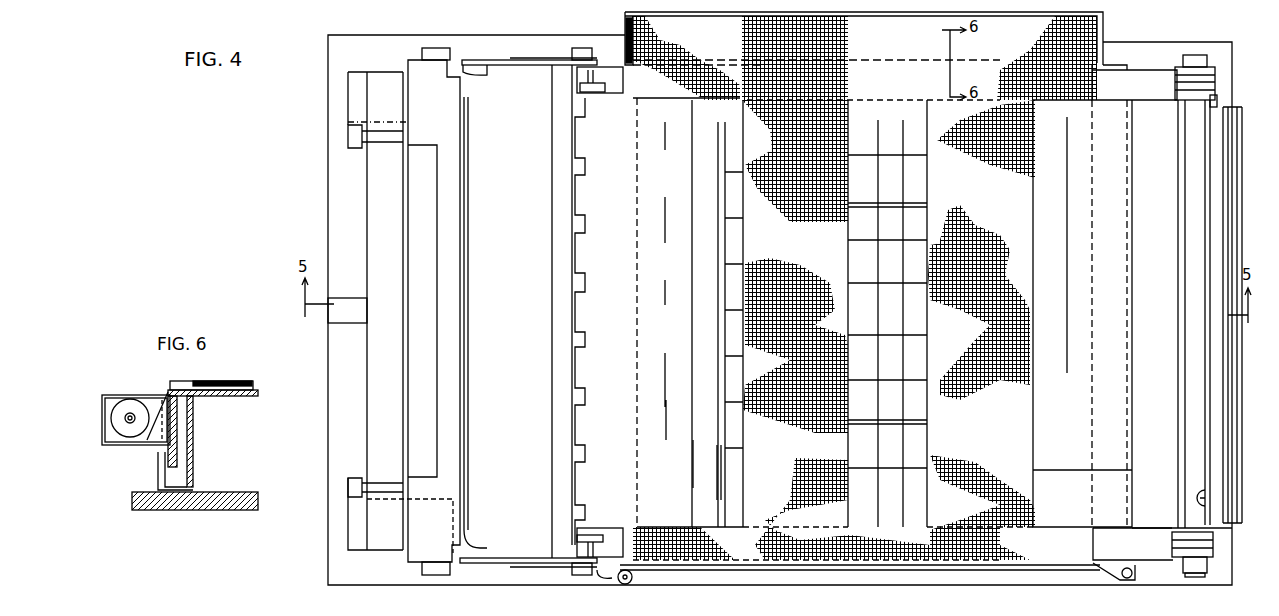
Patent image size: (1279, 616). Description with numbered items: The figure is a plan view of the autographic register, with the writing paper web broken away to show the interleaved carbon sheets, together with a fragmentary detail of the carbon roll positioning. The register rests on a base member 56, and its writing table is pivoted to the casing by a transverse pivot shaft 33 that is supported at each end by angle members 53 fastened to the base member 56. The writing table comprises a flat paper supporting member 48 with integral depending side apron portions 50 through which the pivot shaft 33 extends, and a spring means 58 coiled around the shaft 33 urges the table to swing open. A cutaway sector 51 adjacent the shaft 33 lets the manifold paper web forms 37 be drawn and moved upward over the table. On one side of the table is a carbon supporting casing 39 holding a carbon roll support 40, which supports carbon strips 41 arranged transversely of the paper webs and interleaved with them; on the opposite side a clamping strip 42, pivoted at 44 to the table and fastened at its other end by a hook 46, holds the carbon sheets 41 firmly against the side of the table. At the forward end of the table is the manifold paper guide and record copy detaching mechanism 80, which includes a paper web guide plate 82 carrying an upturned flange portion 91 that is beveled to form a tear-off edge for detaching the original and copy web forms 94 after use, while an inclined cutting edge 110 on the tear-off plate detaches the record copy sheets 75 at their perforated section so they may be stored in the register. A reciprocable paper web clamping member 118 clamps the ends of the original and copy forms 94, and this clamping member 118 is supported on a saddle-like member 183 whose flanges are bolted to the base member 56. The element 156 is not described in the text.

In FIG. 4, the transverse pivot shaft 33 is at (1218, 38).
In FIG. 4, the manifold paper web forms 37 is at (637, 135).
In FIG. 4, the carbon supporting casing 39 is at (624, 25).
In FIG. 6, the carbon supporting casing 39 is at (103, 398).
In FIG. 4, the carbon roll support 40 is at (1100, 44).
In FIG. 6, the carbon roll support 40 is at (131, 414).
In FIG. 4, the carbon strips 41 is at (870, 52).
In FIG. 6, the carbon strips 41 is at (176, 383).
In FIG. 4, the clamping strip 42 is at (813, 568).
In FIG. 4, the pivot 44 is at (1128, 580).
In FIG. 4, the hook 46 is at (632, 584).
In FIG. 6, the paper supporting member 48 is at (252, 397).
In FIG. 6, the side apron portions 50 is at (172, 463).
In FIG. 4, the cutaway sector 51 is at (1132, 287).
In FIG. 4, the angle members 53 is at (1182, 557).
In FIG. 4, the base member 56 is at (1226, 586).
In FIG. 4, the spring means 58 is at (1212, 545).
In FIG. 4, the copy sheets 75 is at (624, 406).
In FIG. 4, the manifold paper guide and record copy detaching mechanism 80 is at (514, 470).
In FIG. 4, the paper web guide plate 82 is at (512, 520).
In FIG. 4, the upturned flange portion 91 is at (468, 373).
In FIG. 4, the original and copy web forms 94 is at (1040, 432).
In FIG. 4, the inclined cutting edge 110 is at (525, 332).
In FIG. 4, the paper web clamping member 118 is at (423, 78).
In FIG. 4, the guide rail 156 is at (427, 252).
In FIG. 4, the saddle-like member 183 is at (377, 383).